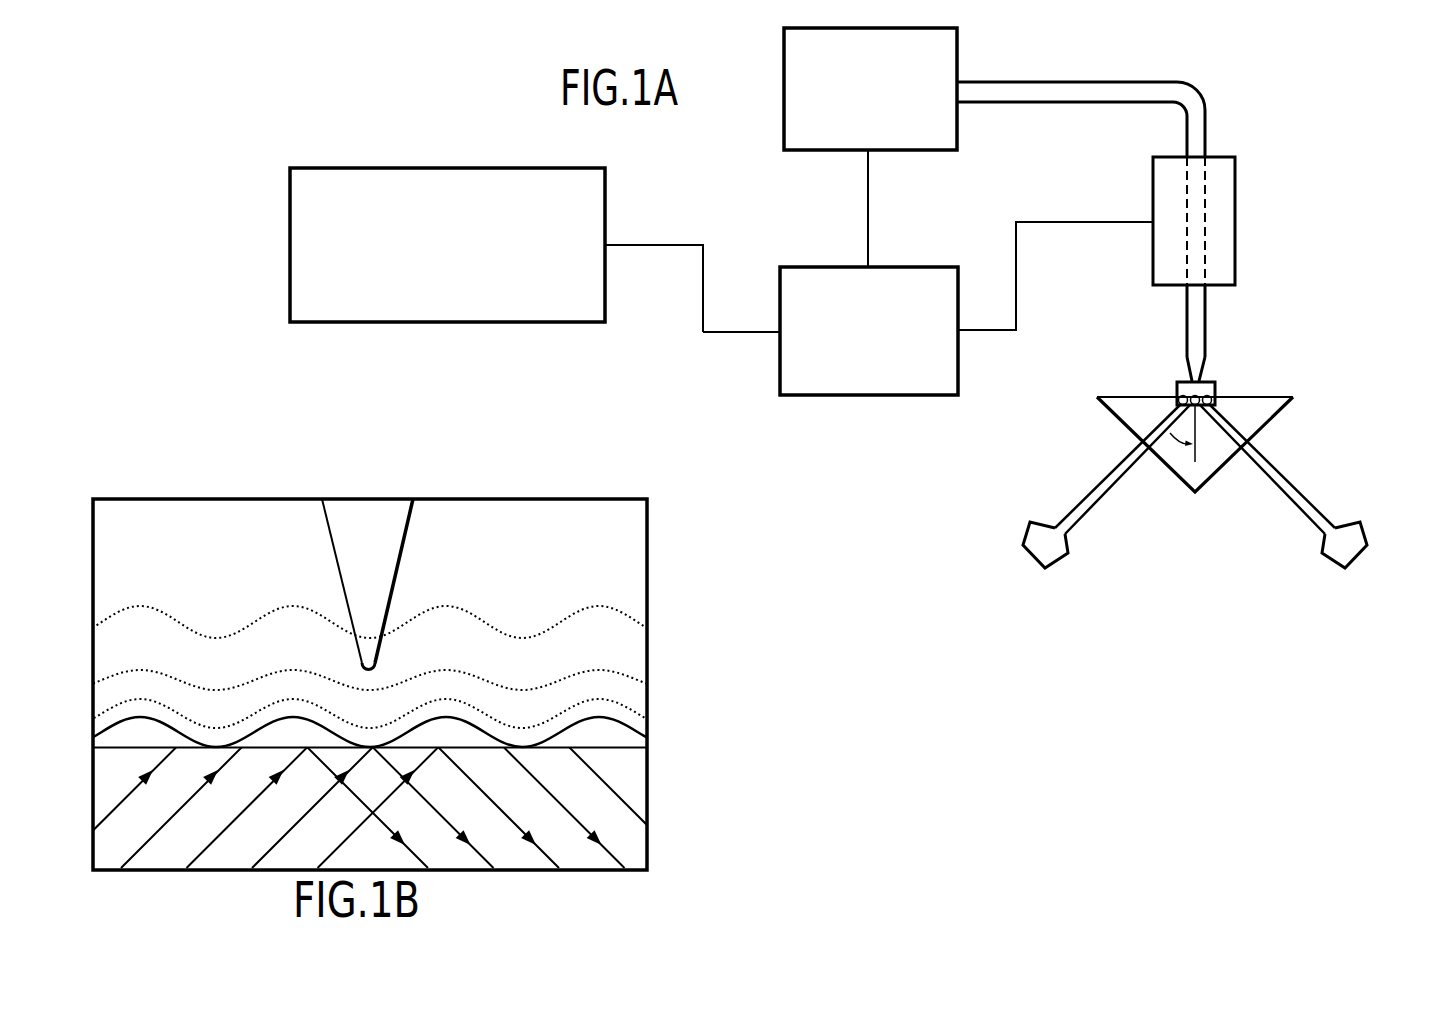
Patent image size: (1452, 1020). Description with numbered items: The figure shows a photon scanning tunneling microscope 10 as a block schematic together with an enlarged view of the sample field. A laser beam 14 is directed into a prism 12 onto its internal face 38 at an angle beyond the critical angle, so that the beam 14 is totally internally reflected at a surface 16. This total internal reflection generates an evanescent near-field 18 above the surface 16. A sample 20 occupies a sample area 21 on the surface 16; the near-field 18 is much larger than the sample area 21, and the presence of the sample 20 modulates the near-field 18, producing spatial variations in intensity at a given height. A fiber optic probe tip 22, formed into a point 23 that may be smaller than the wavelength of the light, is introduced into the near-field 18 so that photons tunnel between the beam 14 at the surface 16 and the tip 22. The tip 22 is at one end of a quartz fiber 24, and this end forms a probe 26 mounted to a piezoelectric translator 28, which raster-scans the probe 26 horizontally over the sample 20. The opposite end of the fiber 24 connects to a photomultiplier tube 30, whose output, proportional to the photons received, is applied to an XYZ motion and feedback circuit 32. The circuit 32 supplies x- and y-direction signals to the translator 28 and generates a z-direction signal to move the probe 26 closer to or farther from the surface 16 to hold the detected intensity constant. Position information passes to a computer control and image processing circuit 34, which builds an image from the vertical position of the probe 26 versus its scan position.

In FIG. 1A, the photon scanning tunneling microscope 10 is at (1322, 604).
In FIG. 1A, the prism 12 is at (1264, 415).
In FIG. 1A, the laser beam 14 is at (1091, 476).
In FIG. 1B, the laser beam 14 is at (248, 862).
In FIG. 1A, the surface 16 is at (1258, 389).
In FIG. 1B, the surface 16 is at (597, 755).
In FIG. 1B, the evanescent near-field 18 is at (630, 658).
In FIG. 1A, the sample 20 is at (1173, 378).
In FIG. 1B, the sample 20 is at (308, 746).
In FIG. 1B, the sample area 21 is at (648, 819).
In FIG. 1A, the fiber optic probe tip 22 is at (1211, 362).
In FIG. 1B, the fiber optic probe tip 22 is at (404, 586).
In FIG. 1B, the point 23 is at (384, 671).
In FIG. 1A, the quartz fiber 24 is at (1050, 89).
In FIG. 1A, the probe 26 is at (1176, 344).
In FIG. 1A, the piezoelectric translator 28 is at (1244, 250).
In FIG. 1A, the photomultiplier tube 30 is at (957, 57).
In FIG. 1A, the XYZ motion and feedback circuit 32 is at (915, 386).
In FIG. 1A, the computer control and image processing circuit 34 is at (453, 322).
In FIG. 1A, the internal face 38 is at (1159, 472).